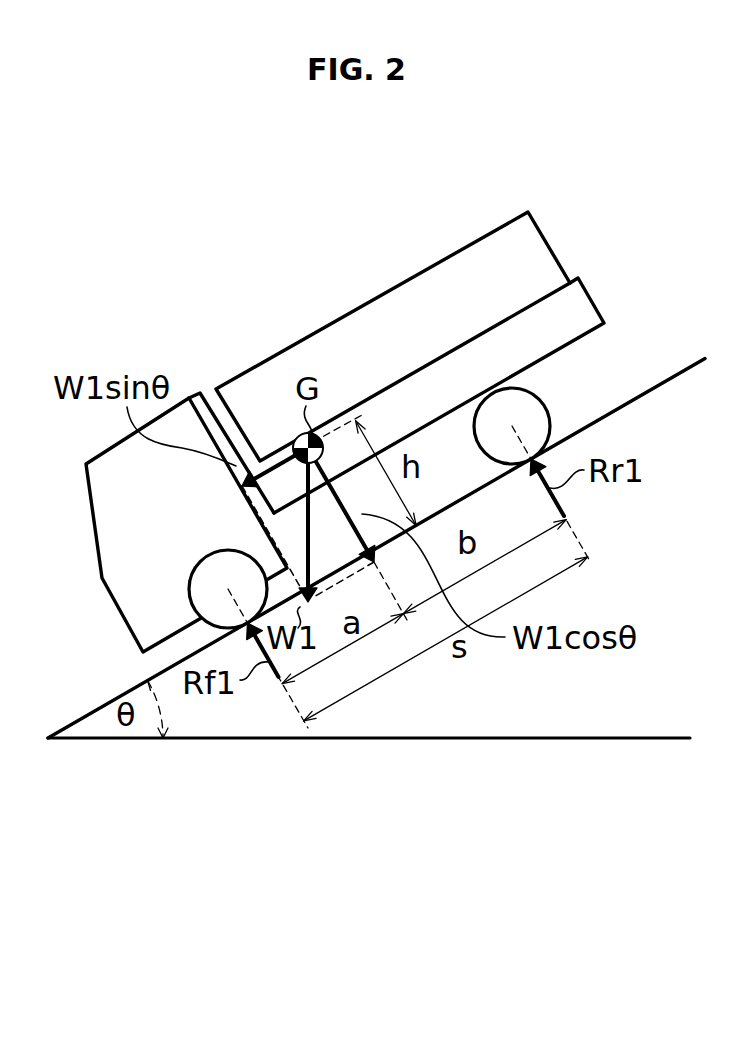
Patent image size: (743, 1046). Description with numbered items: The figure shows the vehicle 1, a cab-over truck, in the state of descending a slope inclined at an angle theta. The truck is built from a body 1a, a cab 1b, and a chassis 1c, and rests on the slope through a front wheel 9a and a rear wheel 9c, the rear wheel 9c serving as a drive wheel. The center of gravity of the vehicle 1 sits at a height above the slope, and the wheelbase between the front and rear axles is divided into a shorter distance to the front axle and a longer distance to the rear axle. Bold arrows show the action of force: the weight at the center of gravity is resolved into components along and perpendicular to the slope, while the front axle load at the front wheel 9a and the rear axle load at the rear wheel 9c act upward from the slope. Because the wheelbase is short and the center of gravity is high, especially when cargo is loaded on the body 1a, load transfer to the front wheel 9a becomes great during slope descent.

The vehicle 1 is at (220, 356).
The body 1a is at (400, 298).
The cab 1b is at (98, 492).
The chassis 1c is at (576, 310).
The front wheel 9a is at (216, 570).
The rear wheel 9c is at (533, 406).